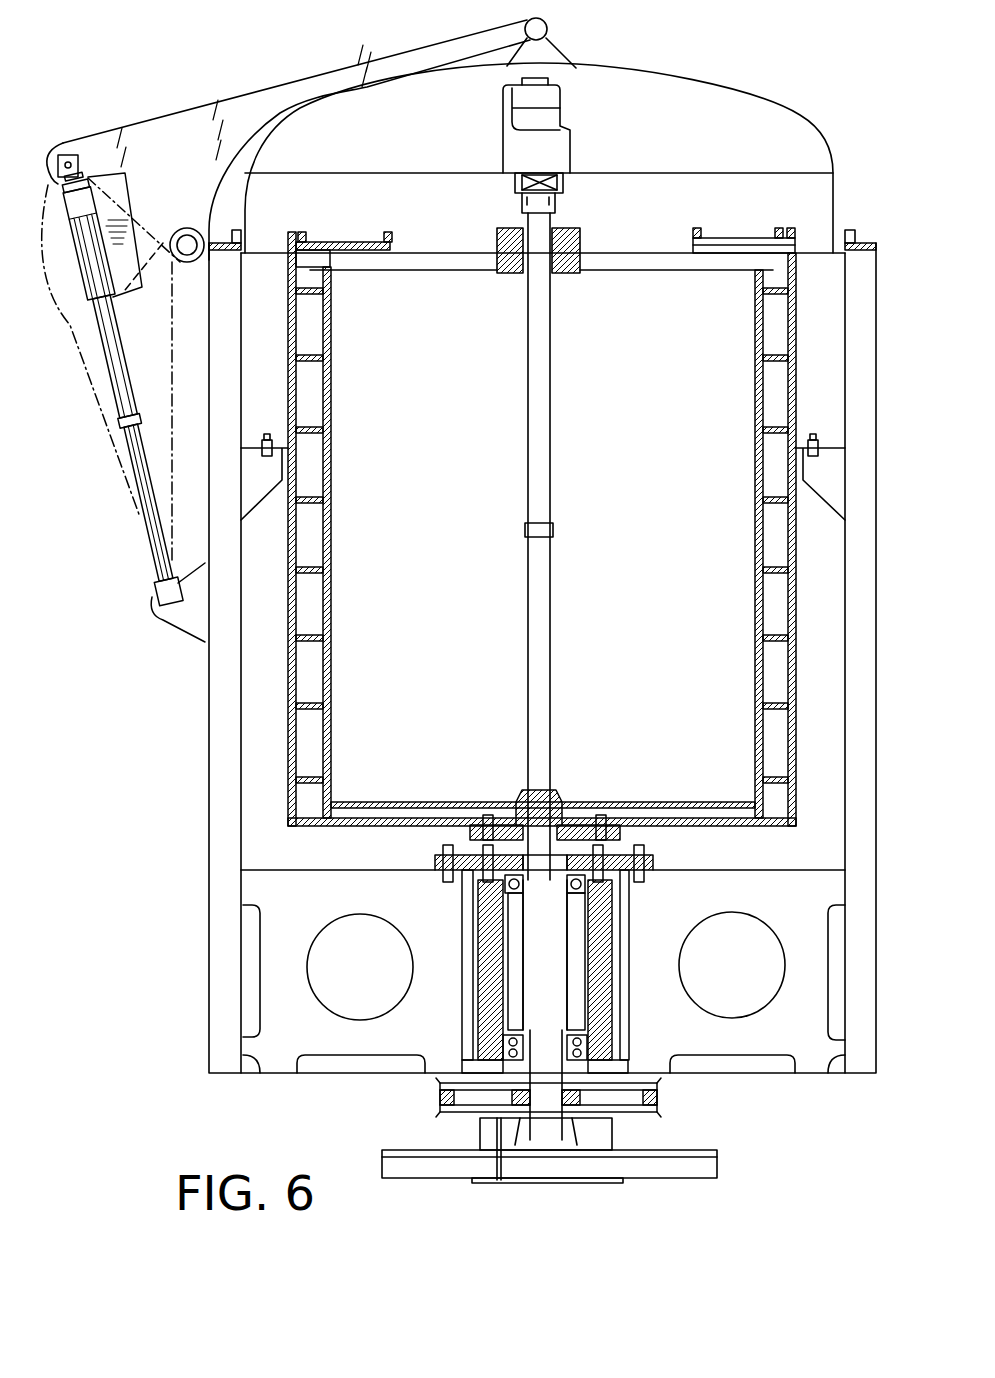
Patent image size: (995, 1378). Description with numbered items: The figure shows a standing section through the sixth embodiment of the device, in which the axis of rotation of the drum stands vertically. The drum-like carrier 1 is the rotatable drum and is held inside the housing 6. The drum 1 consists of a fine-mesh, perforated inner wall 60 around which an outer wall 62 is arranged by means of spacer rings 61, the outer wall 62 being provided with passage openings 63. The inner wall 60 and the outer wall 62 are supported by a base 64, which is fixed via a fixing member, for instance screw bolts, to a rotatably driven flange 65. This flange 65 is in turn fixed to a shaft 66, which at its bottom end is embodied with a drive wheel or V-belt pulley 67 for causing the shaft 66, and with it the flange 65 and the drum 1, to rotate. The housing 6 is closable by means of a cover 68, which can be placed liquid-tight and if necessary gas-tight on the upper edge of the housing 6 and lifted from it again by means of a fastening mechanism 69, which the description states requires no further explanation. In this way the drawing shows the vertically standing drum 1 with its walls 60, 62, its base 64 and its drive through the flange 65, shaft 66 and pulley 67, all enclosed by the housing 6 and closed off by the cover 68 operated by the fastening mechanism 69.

The drum-like carrier 1 is at (366, 500).
The housing 6 is at (224, 980).
The perforated inner wall 60 is at (330, 592).
The spacer rings 61 is at (318, 690).
The outer wall 62 is at (288, 620).
The passage openings 63 is at (288, 735).
The base 64 is at (320, 826).
The rotatably driven flange 65 is at (622, 826).
The shaft 66 is at (547, 967).
The V-belt pulley 67 is at (655, 1100).
The cover 68 is at (723, 117).
The fastening mechanism 69 is at (186, 122).